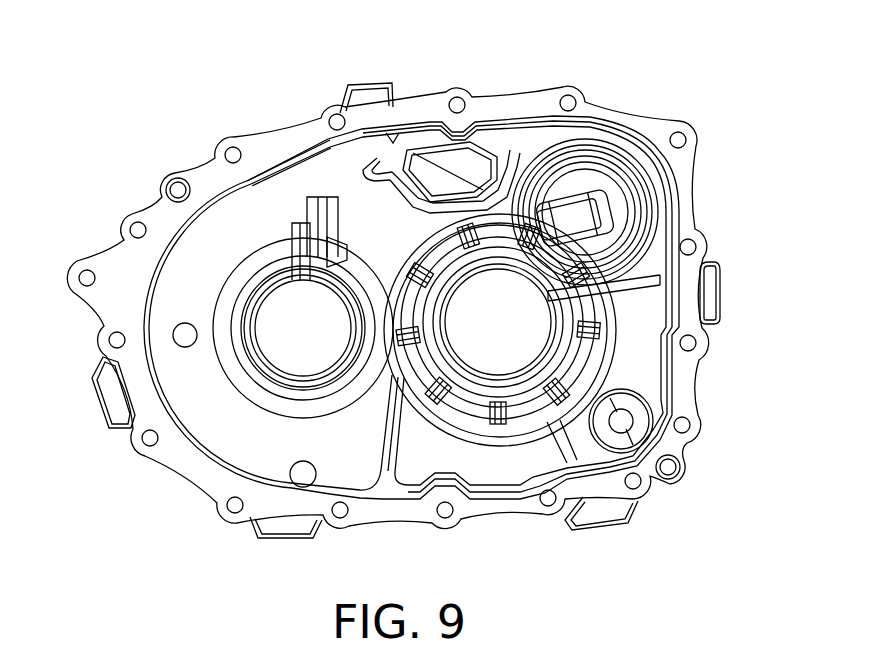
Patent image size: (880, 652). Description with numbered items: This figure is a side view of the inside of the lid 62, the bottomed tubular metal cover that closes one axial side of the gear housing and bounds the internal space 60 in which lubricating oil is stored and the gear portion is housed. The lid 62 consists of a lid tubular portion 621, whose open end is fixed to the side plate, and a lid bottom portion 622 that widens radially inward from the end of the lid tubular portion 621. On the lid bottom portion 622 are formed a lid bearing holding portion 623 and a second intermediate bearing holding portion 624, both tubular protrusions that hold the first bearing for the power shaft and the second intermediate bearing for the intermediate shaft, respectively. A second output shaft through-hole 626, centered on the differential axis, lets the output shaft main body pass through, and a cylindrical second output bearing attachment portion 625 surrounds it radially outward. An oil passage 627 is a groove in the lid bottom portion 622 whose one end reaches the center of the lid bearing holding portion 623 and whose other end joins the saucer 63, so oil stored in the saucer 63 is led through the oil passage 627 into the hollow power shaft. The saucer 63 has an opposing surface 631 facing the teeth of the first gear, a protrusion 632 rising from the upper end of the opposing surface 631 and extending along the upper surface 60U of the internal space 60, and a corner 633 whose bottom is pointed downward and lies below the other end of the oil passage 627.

The internal space 60 is at (298, 178).
The upper surface 60U is at (393, 142).
The lid 62 is at (212, 168).
The lid tubular portion 621 is at (140, 277).
The lid bottom portion 622 is at (175, 368).
The lid bearing holding portion 623 is at (672, 205).
The second intermediate bearing holding portion 624 is at (555, 355).
The second output bearing attachment portion 625 is at (272, 265).
The second output shaft through-hole 626 is at (282, 350).
The oil passage 627 is at (478, 182).
The saucer 63 is at (458, 178).
The opposing surface 631 is at (348, 170).
The protrusion 632 is at (373, 157).
The corner 633 is at (427, 200).